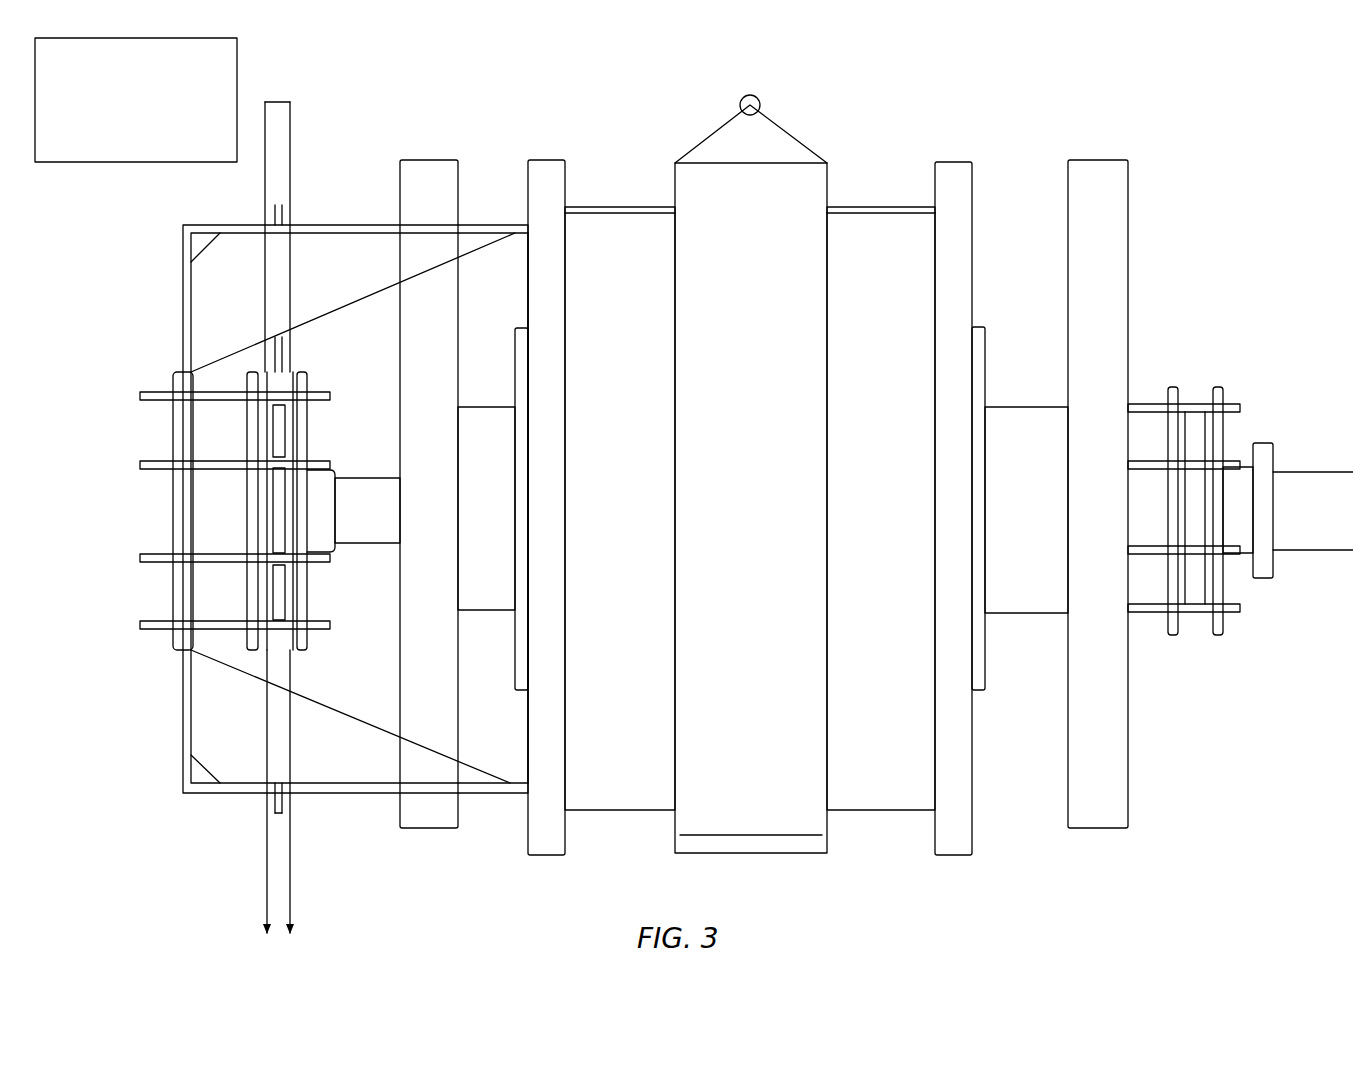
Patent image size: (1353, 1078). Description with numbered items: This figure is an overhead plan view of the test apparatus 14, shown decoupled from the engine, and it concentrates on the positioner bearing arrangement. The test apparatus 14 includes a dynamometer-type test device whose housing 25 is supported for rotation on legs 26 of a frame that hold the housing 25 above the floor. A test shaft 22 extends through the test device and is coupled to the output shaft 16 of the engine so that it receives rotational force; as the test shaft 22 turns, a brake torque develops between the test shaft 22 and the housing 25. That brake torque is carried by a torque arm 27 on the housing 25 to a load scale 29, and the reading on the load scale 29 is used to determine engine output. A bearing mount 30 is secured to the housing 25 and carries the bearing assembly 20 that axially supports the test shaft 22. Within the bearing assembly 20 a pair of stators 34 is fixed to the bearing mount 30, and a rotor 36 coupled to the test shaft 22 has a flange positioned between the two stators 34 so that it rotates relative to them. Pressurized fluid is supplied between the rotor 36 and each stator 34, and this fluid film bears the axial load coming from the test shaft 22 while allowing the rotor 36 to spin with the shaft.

The test apparatus 14 is at (1200, 200).
The output shaft 16 is at (1300, 500).
The bearing assembly 20 is at (313, 132).
The test shaft 22 is at (355, 505).
The housing 25 is at (805, 833).
The legs 26 is at (450, 160).
The torque arm 27 is at (795, 128).
The load scale 29 is at (762, 97).
The bearing mount 30 is at (178, 275).
The stators 34 is at (247, 418).
The rotor 36 is at (270, 530).